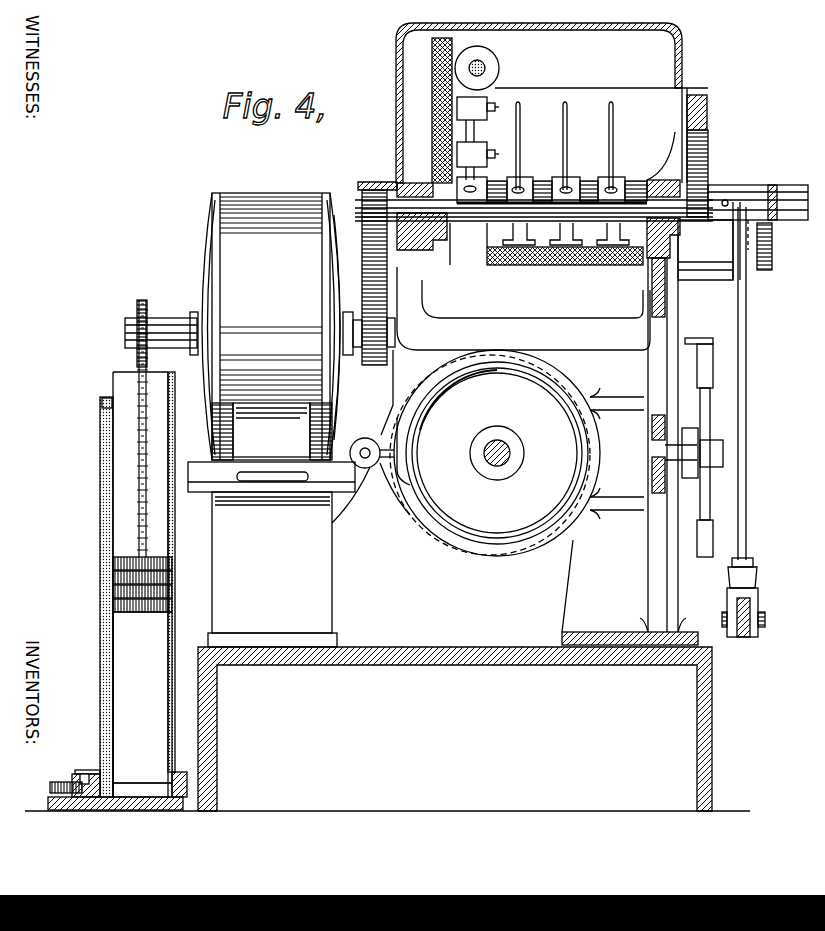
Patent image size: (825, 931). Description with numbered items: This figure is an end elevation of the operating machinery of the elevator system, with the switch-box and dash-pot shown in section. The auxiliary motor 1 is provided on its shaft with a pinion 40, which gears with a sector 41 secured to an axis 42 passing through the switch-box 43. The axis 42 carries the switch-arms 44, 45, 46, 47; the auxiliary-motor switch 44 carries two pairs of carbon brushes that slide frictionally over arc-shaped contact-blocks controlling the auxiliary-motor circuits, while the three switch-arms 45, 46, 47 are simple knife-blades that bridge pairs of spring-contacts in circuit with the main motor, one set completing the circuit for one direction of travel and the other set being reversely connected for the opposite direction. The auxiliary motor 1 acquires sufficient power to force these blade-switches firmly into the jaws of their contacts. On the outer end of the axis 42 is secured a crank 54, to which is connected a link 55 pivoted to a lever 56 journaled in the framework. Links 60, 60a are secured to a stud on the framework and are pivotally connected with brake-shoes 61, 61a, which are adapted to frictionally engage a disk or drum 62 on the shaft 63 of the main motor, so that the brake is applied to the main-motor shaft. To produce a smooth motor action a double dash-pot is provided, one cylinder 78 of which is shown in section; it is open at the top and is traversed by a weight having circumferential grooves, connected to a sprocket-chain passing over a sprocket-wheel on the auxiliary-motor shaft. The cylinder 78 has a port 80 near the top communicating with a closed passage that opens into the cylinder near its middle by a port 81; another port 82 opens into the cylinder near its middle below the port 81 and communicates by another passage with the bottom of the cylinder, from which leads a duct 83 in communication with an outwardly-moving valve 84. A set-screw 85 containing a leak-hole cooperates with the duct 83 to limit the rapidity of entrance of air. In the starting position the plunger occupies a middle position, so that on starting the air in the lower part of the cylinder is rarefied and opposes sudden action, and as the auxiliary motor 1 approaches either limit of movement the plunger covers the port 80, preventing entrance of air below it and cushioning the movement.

The auxiliary motor 1 is at (271, 326).
The pinion 40 is at (377, 352).
The sector 41 is at (365, 238).
The axis 42 is at (413, 185).
The switch-box 43 is at (552, 103).
The auxiliary-motor switch 44 is at (487, 130).
The switch-arm 45 is at (522, 130).
The switch-arm 46 is at (569, 130).
The switch-arm 47 is at (615, 130).
The crank 54 is at (735, 200).
The link 55 is at (747, 357).
The lever 56 is at (745, 637).
The link 60 is at (713, 498).
The link 60a is at (710, 413).
The brake-shoe 61 is at (470, 557).
The brake-shoe 61a is at (488, 350).
The disk or drum 62 is at (497, 453).
The shaft of the main motor 63 is at (510, 452).
The cylinder 78 is at (142, 704).
The port 80 is at (102, 405).
The port 81 is at (110, 577).
The port 82 is at (112, 590).
The duct 83 is at (78, 775).
The outwardly-moving valve 84 is at (88, 770).
The screw 85 is at (55, 786).